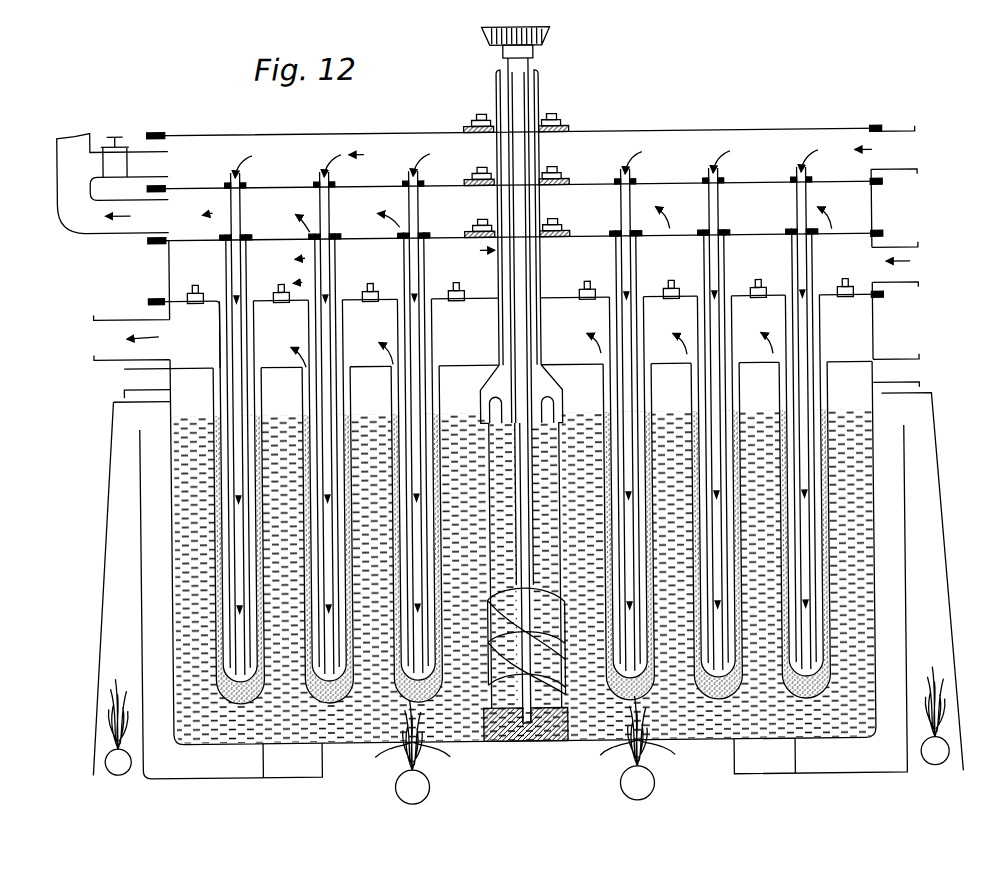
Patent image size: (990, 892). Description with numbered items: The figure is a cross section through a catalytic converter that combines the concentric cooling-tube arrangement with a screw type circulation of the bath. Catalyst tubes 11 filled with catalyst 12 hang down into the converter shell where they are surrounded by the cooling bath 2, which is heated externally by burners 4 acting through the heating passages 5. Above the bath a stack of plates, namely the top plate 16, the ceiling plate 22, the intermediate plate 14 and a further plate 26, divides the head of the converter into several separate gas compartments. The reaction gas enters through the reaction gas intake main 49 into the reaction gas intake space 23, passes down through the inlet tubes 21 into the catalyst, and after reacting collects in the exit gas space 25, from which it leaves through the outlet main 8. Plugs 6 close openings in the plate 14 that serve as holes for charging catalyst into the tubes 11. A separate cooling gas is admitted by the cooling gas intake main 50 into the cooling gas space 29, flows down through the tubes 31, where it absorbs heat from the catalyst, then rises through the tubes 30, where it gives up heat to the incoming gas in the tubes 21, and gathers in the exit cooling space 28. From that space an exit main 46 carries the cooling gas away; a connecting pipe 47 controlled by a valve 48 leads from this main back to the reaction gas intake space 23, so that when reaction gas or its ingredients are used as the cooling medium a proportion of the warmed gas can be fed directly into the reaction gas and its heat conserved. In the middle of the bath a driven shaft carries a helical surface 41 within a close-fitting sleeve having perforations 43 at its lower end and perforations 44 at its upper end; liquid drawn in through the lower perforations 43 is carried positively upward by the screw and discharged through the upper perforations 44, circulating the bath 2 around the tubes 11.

The cooling bath 2 is at (276, 419).
The burners 4 is at (114, 771).
The heating passages 5 is at (466, 369).
The plugs 6 is at (366, 300).
The outlet main 8 is at (145, 319).
The catalyst tubes 11 is at (213, 388).
The catalyst 12 is at (216, 504).
The intermediate plate 14 is at (384, 296).
The top plate 16 is at (410, 133).
The gas inlet tube 21 is at (243, 195).
The ceiling plate 22 is at (394, 187).
The reaction gas intake space 23 is at (279, 182).
The exit gas space 25 is at (517, 343).
The plate 26 is at (422, 228).
The exit cooling space 28 is at (545, 213).
The cooling gas inlet space 29 is at (283, 268).
The tube 30 is at (228, 253).
The tube 31 is at (220, 320).
The helical surface 41 is at (540, 702).
The perforations 43 is at (497, 743).
The perforations 44 is at (555, 404).
The exit main 46 is at (73, 228).
The connecting pipe 47 is at (140, 152).
The valve 48 is at (117, 136).
The reaction gas intake main 49 is at (887, 262).
The cooling gas intake main 50 is at (912, 261).